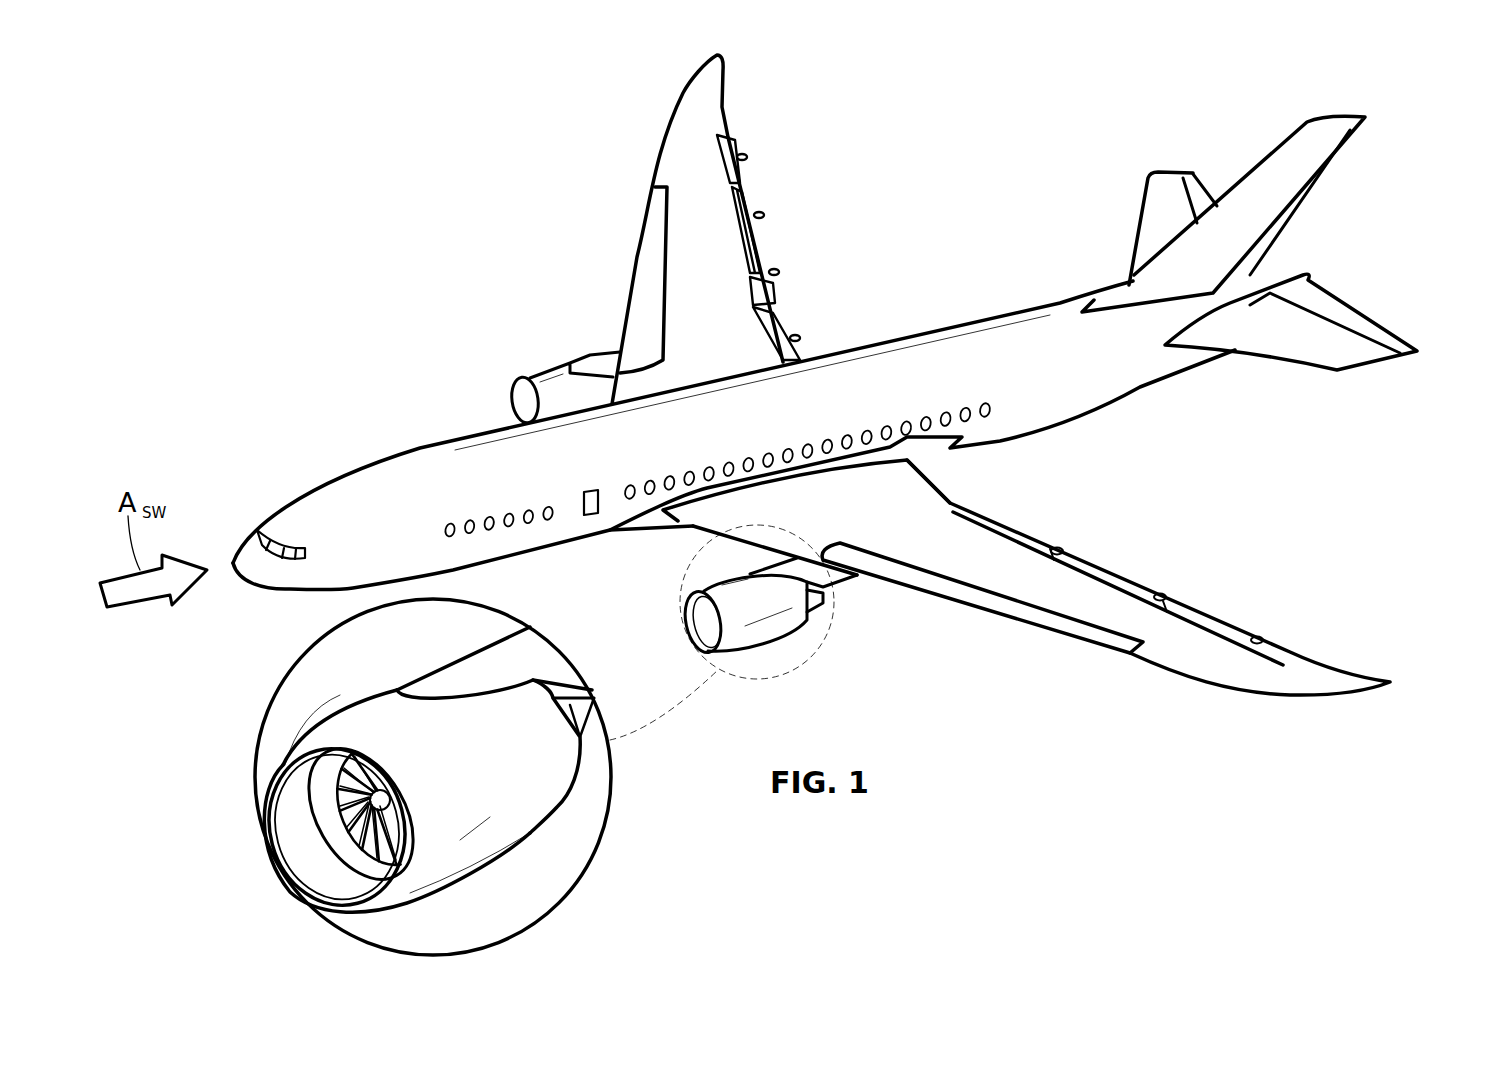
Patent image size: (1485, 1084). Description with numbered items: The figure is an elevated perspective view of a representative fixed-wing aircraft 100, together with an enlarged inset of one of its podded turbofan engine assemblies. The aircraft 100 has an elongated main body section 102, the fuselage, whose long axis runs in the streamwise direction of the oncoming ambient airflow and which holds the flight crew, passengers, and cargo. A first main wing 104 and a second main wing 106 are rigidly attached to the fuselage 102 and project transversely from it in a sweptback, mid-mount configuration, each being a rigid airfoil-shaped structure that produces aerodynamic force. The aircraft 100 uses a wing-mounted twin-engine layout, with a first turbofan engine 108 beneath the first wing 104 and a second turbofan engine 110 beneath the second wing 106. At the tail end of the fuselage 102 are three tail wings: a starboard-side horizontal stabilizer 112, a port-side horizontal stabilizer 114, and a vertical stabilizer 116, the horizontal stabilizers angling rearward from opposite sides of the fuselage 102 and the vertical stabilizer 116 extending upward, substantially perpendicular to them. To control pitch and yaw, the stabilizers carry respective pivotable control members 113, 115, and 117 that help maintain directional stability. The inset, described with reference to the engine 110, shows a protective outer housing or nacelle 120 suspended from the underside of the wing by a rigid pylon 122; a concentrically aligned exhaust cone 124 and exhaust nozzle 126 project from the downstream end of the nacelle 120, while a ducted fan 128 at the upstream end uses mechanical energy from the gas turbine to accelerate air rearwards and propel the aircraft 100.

The aircraft 100 is at (340, 110).
The main body section 102 is at (368, 405).
The first main wing 104 is at (638, 255).
The second main wing 106 is at (1038, 635).
The first turbofan engine 108 is at (535, 365).
The second turbofan engine 110 is at (772, 638).
The first horizontal stabilizer 112 is at (1137, 228).
The control member 113 is at (1188, 178).
The second horizontal stabilizer 114 is at (1292, 365).
The control member 115 is at (1377, 330).
The vertical stabilizer 116 is at (1278, 140).
The control member 117 is at (1335, 175).
The outer housing 120 is at (370, 727).
The pylon 122 is at (450, 673).
The exhaust cone 124 is at (595, 692).
The exhaust nozzle 126 is at (577, 740).
The ducted fan 128 is at (318, 803).